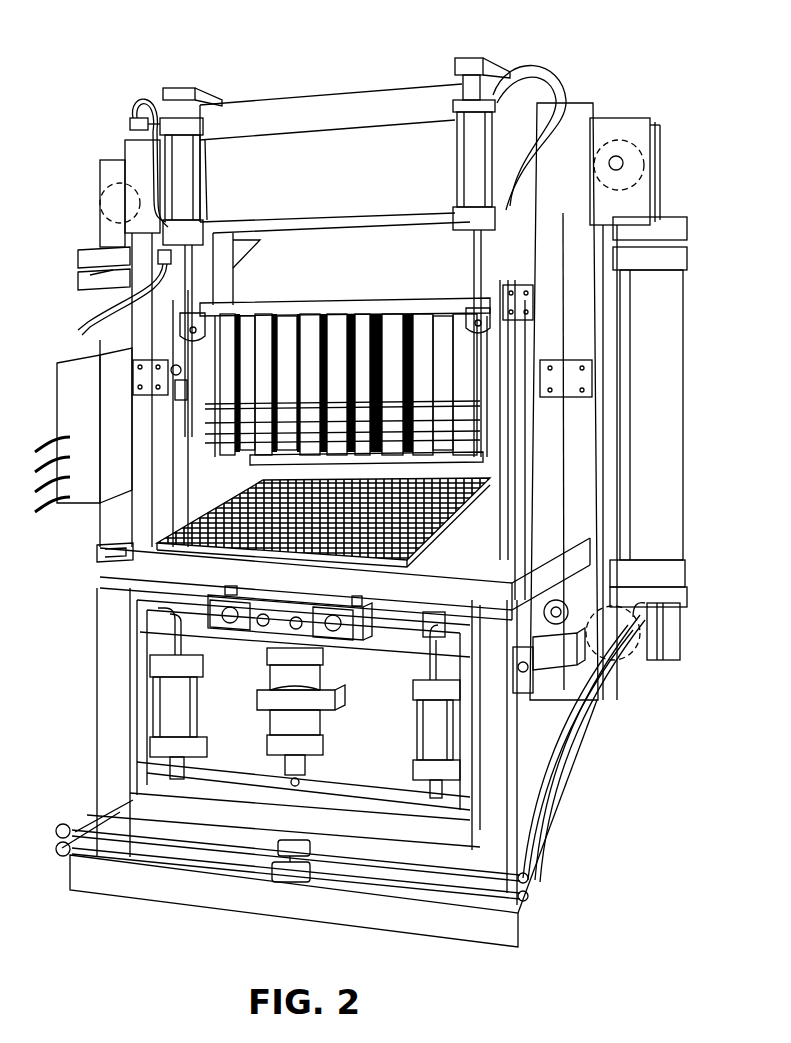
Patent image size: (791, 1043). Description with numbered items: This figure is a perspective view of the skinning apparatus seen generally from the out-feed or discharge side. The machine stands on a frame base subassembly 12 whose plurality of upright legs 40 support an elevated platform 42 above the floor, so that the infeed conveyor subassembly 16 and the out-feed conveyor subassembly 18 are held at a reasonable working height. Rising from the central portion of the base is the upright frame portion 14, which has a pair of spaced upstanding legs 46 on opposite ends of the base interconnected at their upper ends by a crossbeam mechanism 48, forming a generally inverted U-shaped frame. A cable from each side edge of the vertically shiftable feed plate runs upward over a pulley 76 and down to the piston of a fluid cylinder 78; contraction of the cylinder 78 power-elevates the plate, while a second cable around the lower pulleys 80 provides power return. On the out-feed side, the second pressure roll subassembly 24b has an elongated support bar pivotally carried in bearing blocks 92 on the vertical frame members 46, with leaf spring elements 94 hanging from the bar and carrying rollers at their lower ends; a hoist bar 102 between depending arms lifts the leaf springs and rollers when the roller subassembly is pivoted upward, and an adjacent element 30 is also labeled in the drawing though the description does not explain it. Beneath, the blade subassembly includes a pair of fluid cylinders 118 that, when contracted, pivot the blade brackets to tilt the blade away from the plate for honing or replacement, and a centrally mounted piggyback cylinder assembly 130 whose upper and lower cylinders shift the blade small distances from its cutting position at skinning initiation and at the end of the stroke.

The frame base subassembly 12 is at (516, 754).
The upright frame portion 14 is at (335, 163).
The infeed conveyor subassembly 16 is at (330, 492).
The out-feed conveyor subassembly 18 is at (176, 548).
The second pressure roll subassembly 24b is at (297, 322).
The tine support bar 30 is at (445, 303).
The upright legs 40 is at (108, 737).
The elevated platform 42 is at (145, 590).
The upstanding legs 46 is at (143, 250).
The crossbeam mechanism 48 is at (331, 153).
The pulley 76 is at (112, 201).
The fluid cylinder 78 is at (115, 340).
The lower pulleys 80 is at (668, 625).
The bearing blocks 92 is at (523, 300).
The leaf spring elements 94 is at (393, 334).
The hoist bar 102 is at (212, 424).
The fluid cylinders 118 is at (193, 708).
The piggyback cylinder assembly 130 is at (338, 693).